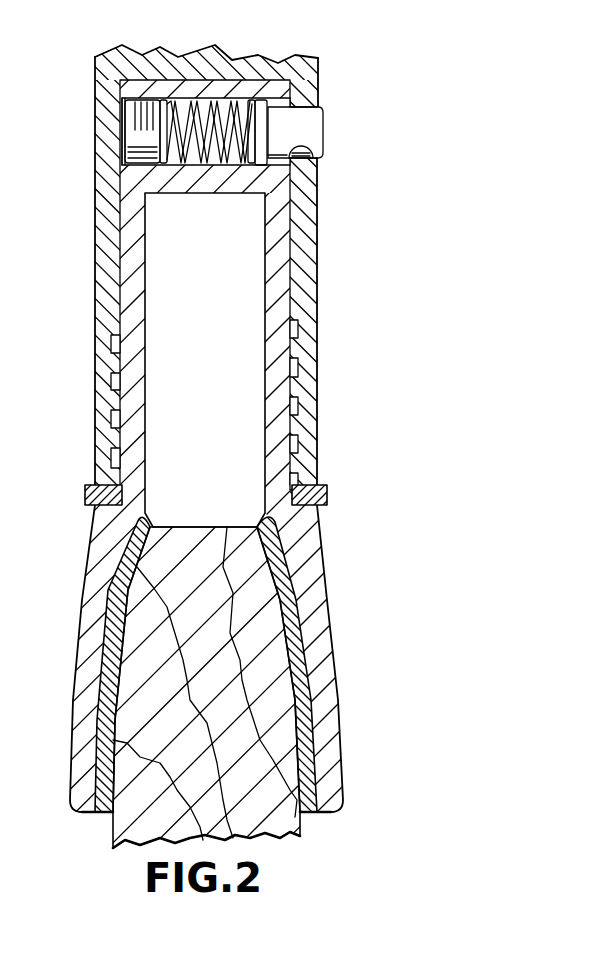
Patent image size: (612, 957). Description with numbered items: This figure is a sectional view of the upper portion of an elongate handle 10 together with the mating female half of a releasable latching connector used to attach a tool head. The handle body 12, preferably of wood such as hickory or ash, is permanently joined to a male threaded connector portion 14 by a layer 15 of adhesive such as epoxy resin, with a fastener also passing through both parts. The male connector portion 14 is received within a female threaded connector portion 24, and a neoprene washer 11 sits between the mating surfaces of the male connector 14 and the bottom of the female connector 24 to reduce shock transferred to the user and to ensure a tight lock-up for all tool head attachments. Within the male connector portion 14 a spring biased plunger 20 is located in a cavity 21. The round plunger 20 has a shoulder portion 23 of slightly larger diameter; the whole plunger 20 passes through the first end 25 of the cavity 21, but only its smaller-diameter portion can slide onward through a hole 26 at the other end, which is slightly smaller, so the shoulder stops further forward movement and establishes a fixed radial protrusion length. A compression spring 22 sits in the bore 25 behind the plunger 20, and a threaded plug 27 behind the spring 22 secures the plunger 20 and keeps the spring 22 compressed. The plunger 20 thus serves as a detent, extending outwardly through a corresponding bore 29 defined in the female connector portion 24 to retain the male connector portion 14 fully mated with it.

The elongate handle 10 is at (341, 620).
The neoprene washer 11 is at (328, 497).
The handle body 12 is at (303, 828).
The male threaded connector portion 14 is at (282, 308).
The layer of adhesive 15 is at (108, 652).
The spring biased plunger 20 is at (327, 123).
The cavity 21 is at (240, 103).
The compression spring 22 is at (198, 100).
The shoulder portion 23 is at (266, 135).
The female threaded connector portion 24 is at (310, 230).
The first end of the cavity 25 is at (120, 150).
The hole 26 is at (298, 155).
The threaded plug 27 is at (135, 113).
The bore 29 is at (305, 107).